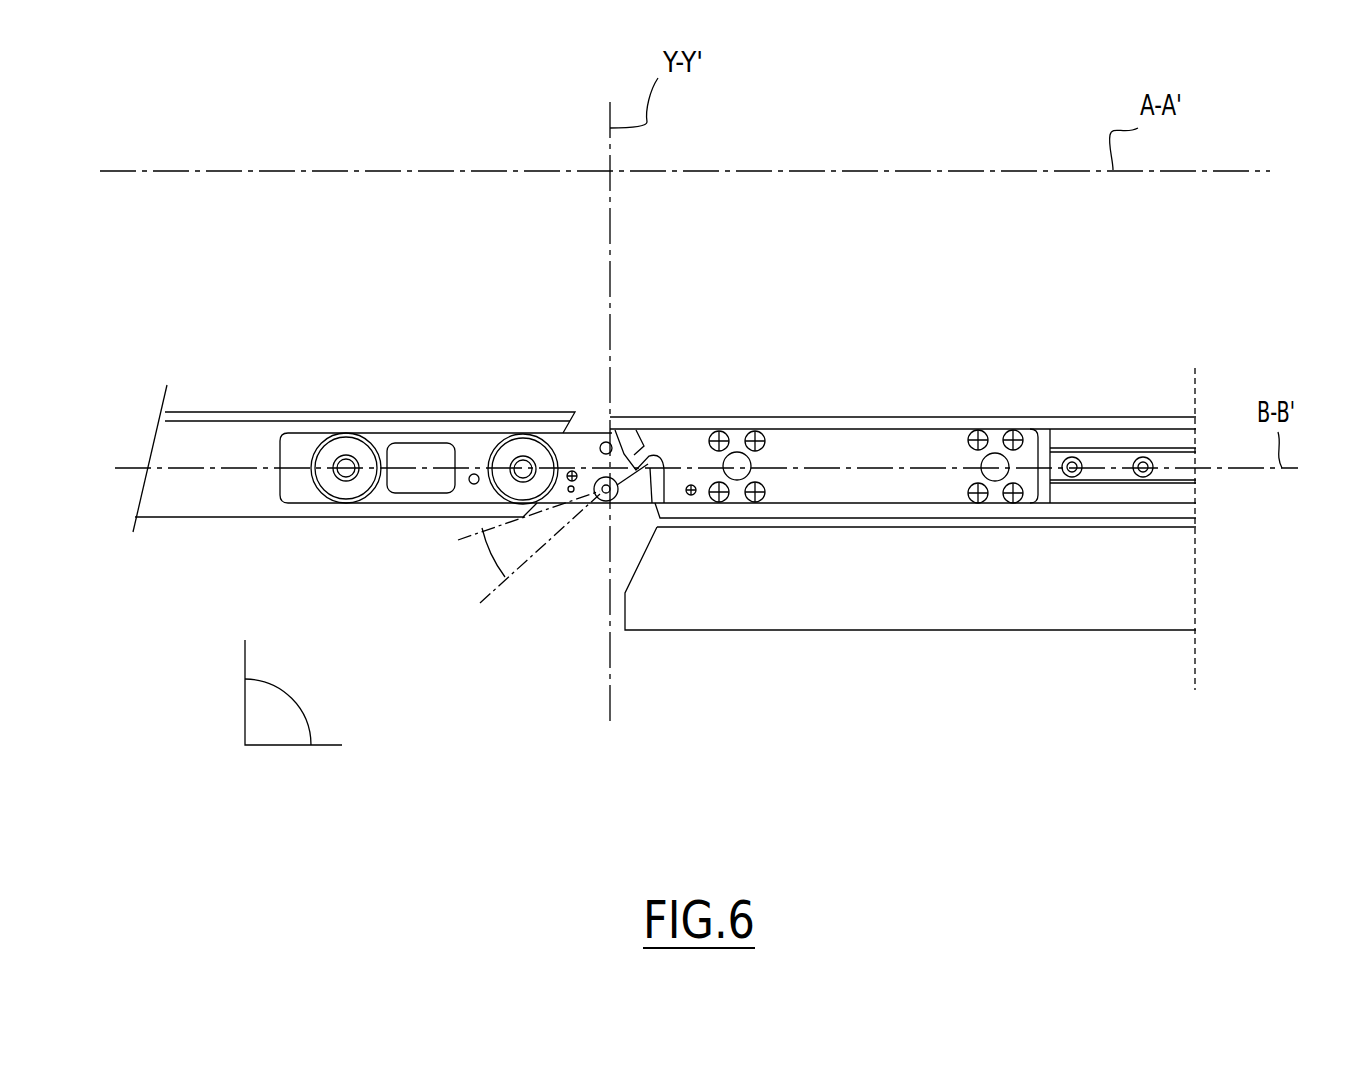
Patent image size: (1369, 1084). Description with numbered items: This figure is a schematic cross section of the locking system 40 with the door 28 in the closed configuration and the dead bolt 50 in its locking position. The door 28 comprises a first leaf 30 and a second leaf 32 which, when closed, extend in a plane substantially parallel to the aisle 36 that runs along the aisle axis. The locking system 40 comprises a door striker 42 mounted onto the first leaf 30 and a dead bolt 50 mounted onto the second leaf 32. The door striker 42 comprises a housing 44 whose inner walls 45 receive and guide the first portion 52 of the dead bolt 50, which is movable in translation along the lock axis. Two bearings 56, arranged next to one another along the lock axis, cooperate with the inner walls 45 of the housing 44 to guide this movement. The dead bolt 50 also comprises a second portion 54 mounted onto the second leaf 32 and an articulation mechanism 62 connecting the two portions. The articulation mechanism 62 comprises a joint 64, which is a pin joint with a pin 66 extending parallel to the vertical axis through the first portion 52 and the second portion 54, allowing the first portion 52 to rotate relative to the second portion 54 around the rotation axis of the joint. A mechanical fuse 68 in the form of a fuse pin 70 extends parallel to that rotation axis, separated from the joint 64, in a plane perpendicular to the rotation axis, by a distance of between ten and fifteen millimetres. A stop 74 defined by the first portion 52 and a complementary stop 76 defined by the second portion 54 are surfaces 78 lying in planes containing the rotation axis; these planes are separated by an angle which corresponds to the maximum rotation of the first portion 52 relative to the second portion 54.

The door 28 is at (970, 418).
The first leaf 30 is at (380, 412).
The second leaf 32 is at (898, 418).
The aisle 36 is at (770, 130).
The locking system 40 is at (832, 424).
The door striker 42 is at (479, 434).
The housing 44 is at (430, 506).
The inner walls 45 is at (296, 479).
The dead bolt 50 is at (812, 486).
The first portion 52 is at (470, 484).
The second portion 54 is at (910, 483).
The bearing 56 is at (343, 490).
The articulation mechanism 62 is at (627, 508).
The joint 64 is at (565, 548).
The pin 66 is at (600, 497).
The mechanical fuse 68 is at (575, 383).
The fuse pin 70 is at (602, 443).
The stop 74 is at (645, 472).
The complementary stop 76 is at (657, 432).
The surfaces 78 is at (701, 522).